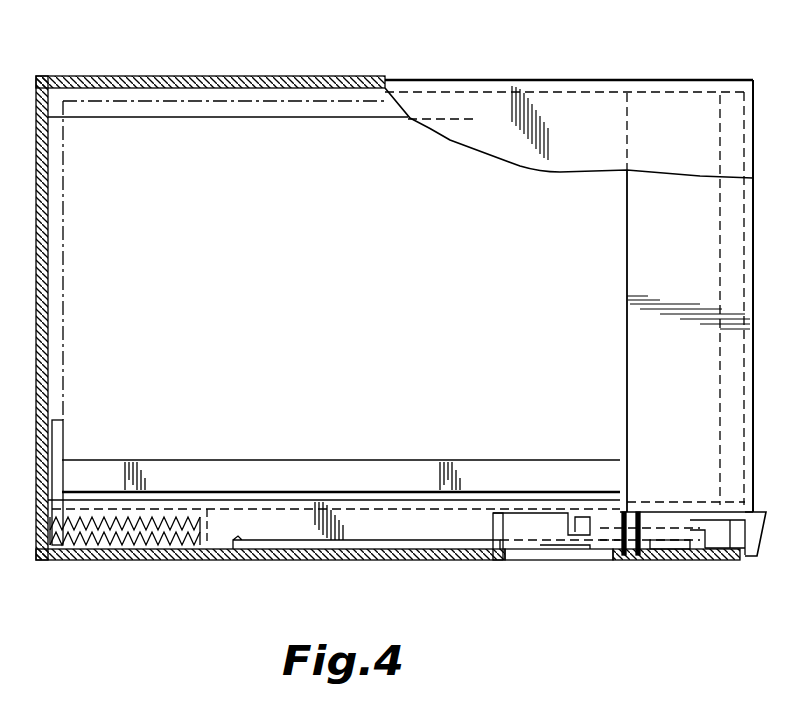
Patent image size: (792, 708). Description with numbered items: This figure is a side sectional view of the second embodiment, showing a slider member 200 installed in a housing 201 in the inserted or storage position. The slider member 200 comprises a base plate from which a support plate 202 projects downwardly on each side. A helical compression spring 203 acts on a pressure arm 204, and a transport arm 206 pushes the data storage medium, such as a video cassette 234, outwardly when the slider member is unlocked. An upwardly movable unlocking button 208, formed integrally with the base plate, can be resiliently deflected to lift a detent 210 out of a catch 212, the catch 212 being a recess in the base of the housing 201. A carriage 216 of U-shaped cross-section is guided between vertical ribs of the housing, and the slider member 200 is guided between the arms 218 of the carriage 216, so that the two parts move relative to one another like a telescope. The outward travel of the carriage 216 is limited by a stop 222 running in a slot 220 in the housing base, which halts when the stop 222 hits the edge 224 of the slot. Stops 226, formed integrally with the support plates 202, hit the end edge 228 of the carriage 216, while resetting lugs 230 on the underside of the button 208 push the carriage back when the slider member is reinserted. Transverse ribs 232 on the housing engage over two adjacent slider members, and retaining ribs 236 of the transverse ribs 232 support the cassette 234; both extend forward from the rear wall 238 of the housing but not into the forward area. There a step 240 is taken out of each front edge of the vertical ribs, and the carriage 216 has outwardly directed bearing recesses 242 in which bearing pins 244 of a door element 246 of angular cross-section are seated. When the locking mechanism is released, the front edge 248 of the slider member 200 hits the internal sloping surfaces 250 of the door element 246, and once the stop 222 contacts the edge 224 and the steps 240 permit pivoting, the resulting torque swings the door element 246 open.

The slider member 200 is at (393, 494).
The housing 201 is at (100, 74).
The support plate 202 is at (393, 528).
The helical compression spring 203 is at (133, 546).
The pressure arm 204 is at (210, 520).
The transport arm 206 is at (63, 432).
The unlocking button 208 is at (760, 530).
The detent 210 is at (722, 556).
The catch 212 is at (748, 556).
The carriage 216 is at (563, 548).
The arms 218 is at (527, 530).
The slot 220 is at (590, 556).
The stop 222 is at (502, 560).
The edge 224 is at (612, 520).
The stops 226 is at (236, 556).
The end edge 228 is at (478, 556).
The resetting lugs 230 is at (668, 545).
The transverse ribs 232 is at (300, 495).
The cassette 234 is at (163, 100).
The retaining ribs 236 is at (165, 470).
The rear wall 238 is at (48, 237).
The step 240 is at (730, 515).
The bearing recesses 242 is at (598, 525).
The bearing pins 244 is at (638, 525).
The door element 246 is at (640, 235).
The front edge 248 is at (730, 510).
The internal sloping surfaces 250 is at (740, 230).